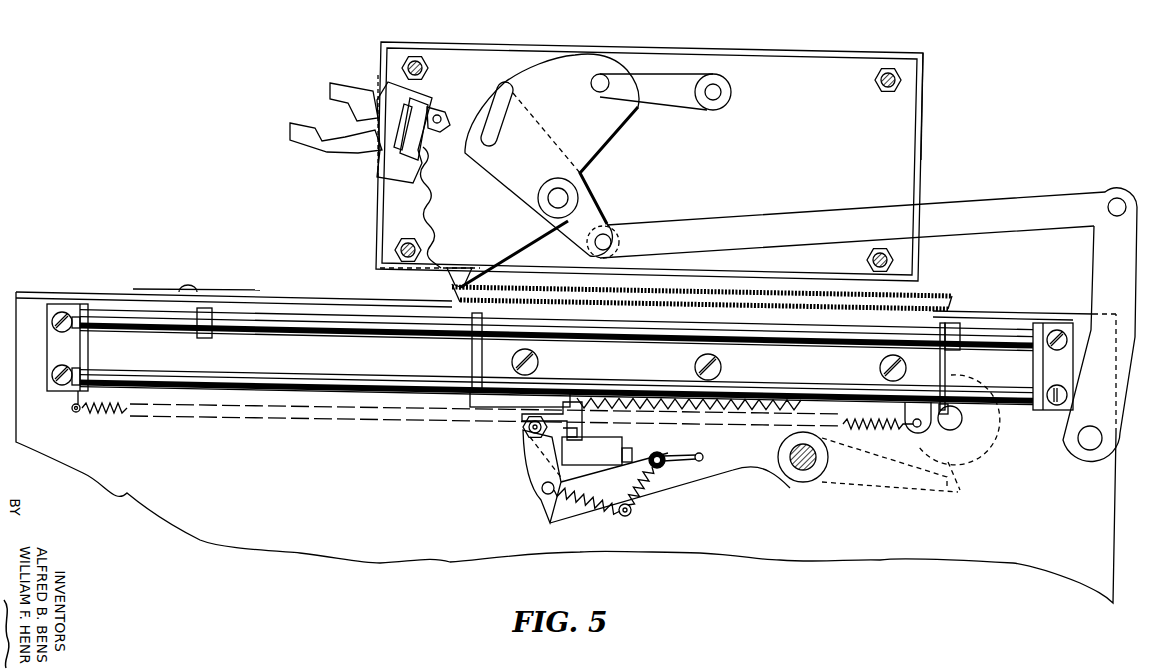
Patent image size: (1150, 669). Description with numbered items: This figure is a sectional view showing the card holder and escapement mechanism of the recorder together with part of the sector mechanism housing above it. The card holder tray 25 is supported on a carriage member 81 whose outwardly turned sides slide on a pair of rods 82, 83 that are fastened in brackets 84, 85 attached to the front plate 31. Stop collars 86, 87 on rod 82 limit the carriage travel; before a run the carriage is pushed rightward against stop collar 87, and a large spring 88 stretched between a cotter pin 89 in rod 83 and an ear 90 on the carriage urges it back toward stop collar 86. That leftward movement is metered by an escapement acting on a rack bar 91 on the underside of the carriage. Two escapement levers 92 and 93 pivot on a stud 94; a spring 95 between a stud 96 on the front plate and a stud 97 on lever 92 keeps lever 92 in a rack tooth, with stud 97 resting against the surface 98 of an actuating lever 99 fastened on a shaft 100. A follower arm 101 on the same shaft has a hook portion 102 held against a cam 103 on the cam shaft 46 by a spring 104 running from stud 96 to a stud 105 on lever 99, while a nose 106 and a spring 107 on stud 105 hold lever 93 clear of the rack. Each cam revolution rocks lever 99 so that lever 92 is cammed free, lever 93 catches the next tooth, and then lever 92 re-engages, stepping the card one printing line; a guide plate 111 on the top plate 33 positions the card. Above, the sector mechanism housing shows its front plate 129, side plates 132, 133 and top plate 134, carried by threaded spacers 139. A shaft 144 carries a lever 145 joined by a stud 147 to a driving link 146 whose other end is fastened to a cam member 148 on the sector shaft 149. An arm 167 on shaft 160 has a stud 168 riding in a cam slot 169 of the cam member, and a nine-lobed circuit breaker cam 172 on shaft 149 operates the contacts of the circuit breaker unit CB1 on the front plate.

The card holder tray 25 is at (930, 296).
The front plate 31 is at (884, 563).
The top plate 33 is at (77, 292).
The cam shaft 46 is at (963, 419).
The carriage member 81 is at (476, 357).
The rod 82 is at (304, 335).
The rod 83 is at (330, 373).
The bracket 84 is at (75, 352).
The bracket 85 is at (1040, 364).
The stop collar 86 is at (207, 340).
The stop collar 87 is at (948, 346).
The large spring 88 is at (102, 414).
The cotter pin 89 is at (72, 408).
The ear 90 is at (910, 428).
The rack bar 91 is at (746, 399).
The escapement lever 92 is at (567, 402).
The escapement lever 93 is at (568, 432).
The stud 94 is at (521, 429).
The spring 95 is at (597, 506).
The stud 96 is at (630, 514).
The stud 97 is at (541, 489).
The surface 98 is at (545, 510).
The actuating lever 99 is at (752, 470).
The shaft 100 is at (800, 468).
The follower arm 101 is at (851, 484).
The hook portion 102 is at (962, 483).
The cam 103 is at (987, 442).
The spring 104 is at (641, 490).
The stud 105 is at (663, 453).
The nose 106 is at (610, 448).
The spring 107 is at (686, 464).
The guide plate 111 is at (258, 292).
The front plate 129 is at (913, 117).
The side plate 132 is at (921, 86).
The side plate 133 is at (380, 213).
The top plate 134 is at (810, 50).
The threaded spacer 139 is at (428, 68).
The shaft 144 is at (1080, 447).
The lever 145 is at (1092, 262).
The driving link 146 is at (950, 206).
The stud 147 is at (1117, 197).
The cam member 148 is at (603, 133).
The sector shaft 149 is at (570, 197).
The shaft 160 is at (727, 91).
The arm 167 is at (720, 106).
The stud 168 is at (611, 75).
The cam slot 169 is at (552, 90).
The circuit breaker cam 172 is at (524, 237).
The circuit breaker unit CB1 is at (378, 82).